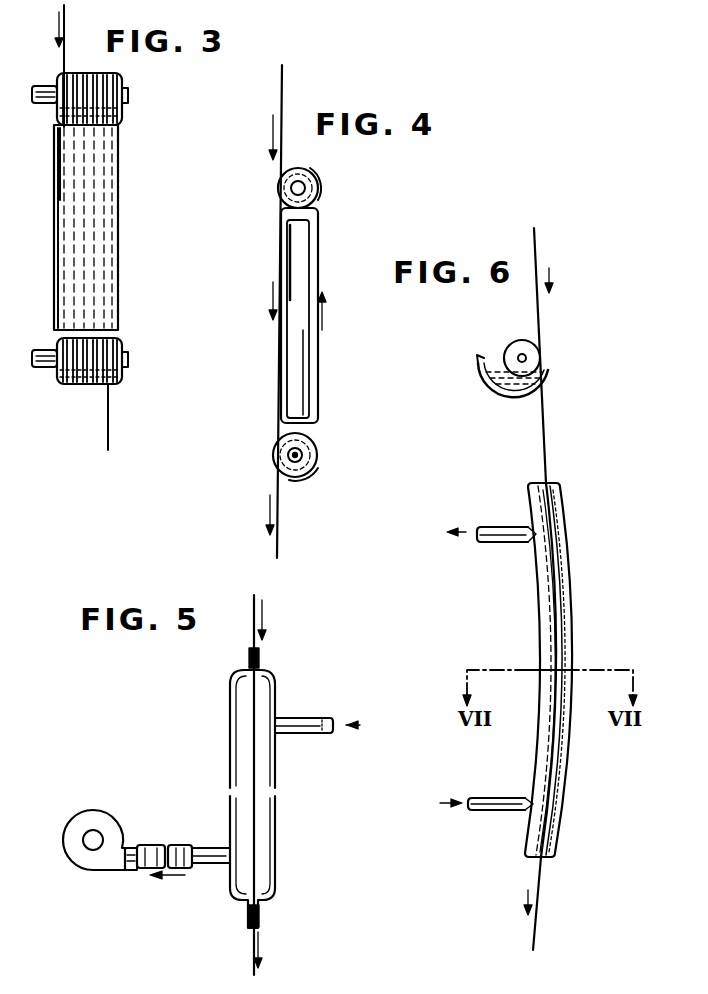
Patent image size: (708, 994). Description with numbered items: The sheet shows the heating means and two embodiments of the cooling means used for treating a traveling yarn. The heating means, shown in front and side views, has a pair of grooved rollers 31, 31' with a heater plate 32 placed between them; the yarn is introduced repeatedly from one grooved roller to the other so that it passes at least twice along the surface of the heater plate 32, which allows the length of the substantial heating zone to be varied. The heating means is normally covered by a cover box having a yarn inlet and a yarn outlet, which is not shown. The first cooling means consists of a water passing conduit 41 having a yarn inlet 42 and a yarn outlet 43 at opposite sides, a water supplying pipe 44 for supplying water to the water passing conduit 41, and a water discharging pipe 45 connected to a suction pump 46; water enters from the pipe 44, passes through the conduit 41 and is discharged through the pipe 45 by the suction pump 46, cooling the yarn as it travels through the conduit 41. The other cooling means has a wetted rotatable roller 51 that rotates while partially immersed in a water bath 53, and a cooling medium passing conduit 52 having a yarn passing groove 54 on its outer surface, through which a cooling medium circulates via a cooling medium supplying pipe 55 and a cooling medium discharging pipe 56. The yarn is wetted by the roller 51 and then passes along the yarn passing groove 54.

In FIG. 3, the grooved roller 31 is at (98, 99).
In FIG. 4, the grooved roller 31 is at (282, 188).
In FIG. 3, the grooved roller 31' is at (98, 372).
In FIG. 4, the grooved roller 31' is at (276, 457).
In FIG. 3, the heater plate 32 is at (118, 228).
In FIG. 4, the heater plate 32 is at (310, 352).
In FIG. 5, the water passing conduit 41 is at (231, 742).
In FIG. 5, the yarn inlet 42 is at (249, 653).
In FIG. 5, the yarn outlet 43 is at (248, 918).
In FIG. 5, the water supplying pipe 44 is at (309, 708).
In FIG. 5, the water discharging pipe 45 is at (200, 848).
In FIG. 5, the suction pump 46 is at (100, 815).
In FIG. 6, the wetted rotatable roller 51 is at (520, 341).
In FIG. 6, the cooling medium passing conduit 52 is at (540, 596).
In FIG. 6, the water bath 53 is at (494, 400).
In FIG. 6, the yarn passing groove 54 is at (573, 600).
In FIG. 6, the cooling medium supplying pipe 55 is at (517, 811).
In FIG. 6, the cooling medium discharging pipe 56 is at (505, 527).